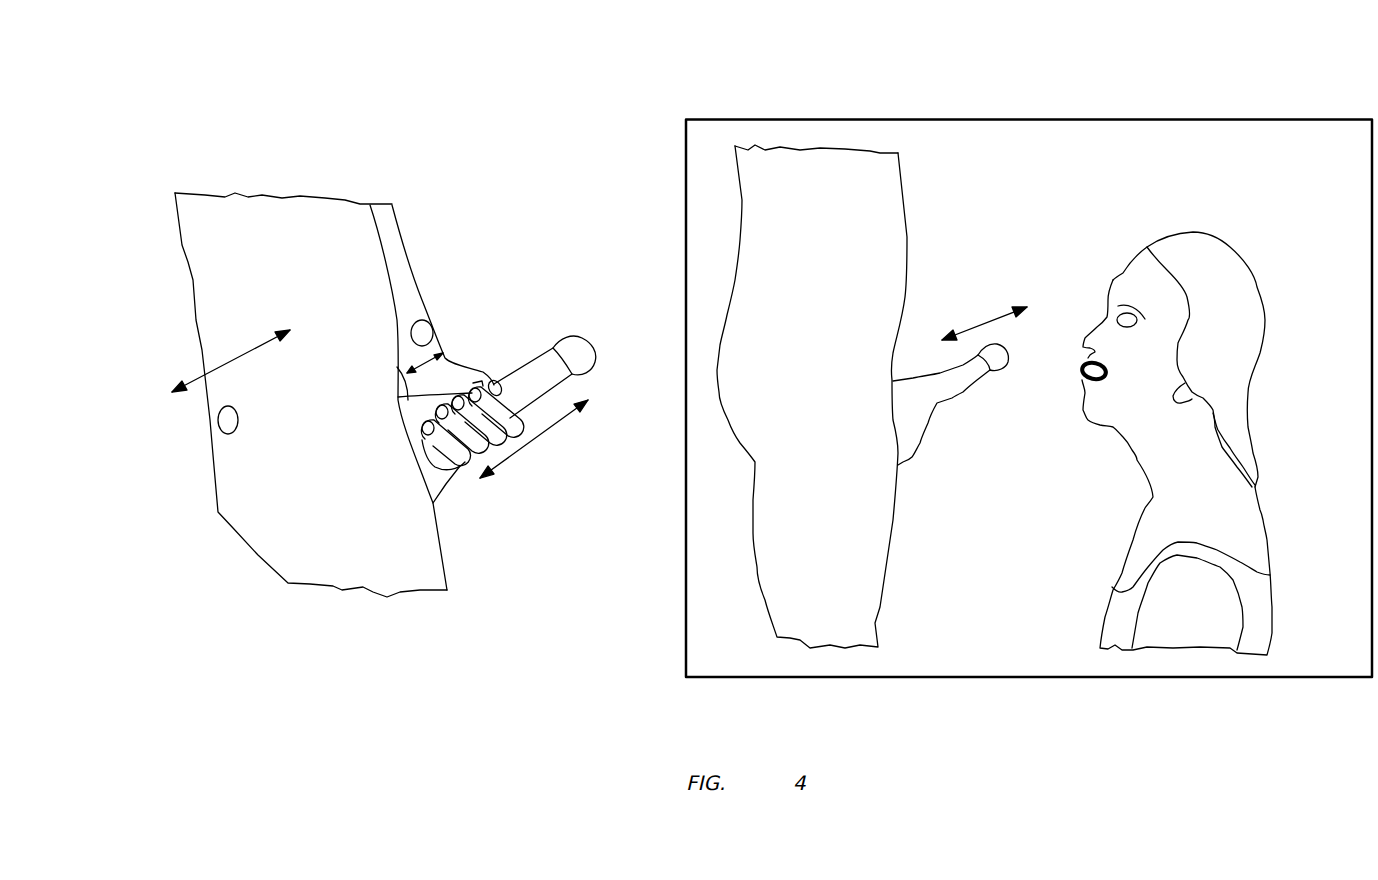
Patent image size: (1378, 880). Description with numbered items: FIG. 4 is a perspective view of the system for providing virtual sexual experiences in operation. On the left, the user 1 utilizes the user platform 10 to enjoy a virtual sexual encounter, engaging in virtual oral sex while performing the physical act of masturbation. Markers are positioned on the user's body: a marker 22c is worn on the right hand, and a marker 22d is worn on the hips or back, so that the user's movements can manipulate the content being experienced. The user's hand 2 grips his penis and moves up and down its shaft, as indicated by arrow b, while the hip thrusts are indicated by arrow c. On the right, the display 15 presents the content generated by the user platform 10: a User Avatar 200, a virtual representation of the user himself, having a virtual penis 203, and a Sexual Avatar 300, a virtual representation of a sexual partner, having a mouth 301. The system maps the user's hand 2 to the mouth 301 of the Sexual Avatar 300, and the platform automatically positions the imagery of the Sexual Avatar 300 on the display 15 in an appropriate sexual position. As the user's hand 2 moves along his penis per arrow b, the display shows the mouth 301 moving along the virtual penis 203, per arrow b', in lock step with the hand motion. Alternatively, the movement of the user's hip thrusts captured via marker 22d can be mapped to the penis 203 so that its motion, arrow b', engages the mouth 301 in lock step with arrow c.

The user platform 10 is at (176, 133).
The user 1 is at (268, 296).
The user's hand 2 is at (443, 389).
The marker 22c is at (424, 335).
The marker 22d is at (225, 420).
The arrow c is at (237, 357).
The arrow b is at (534, 449).
The display 15 is at (722, 93).
The User Avatar 200 is at (845, 258).
The penis 203 is at (952, 395).
The arrow b' is at (984, 294).
The Sexual Avatar 300 is at (1240, 518).
The mouth 301 is at (1083, 376).